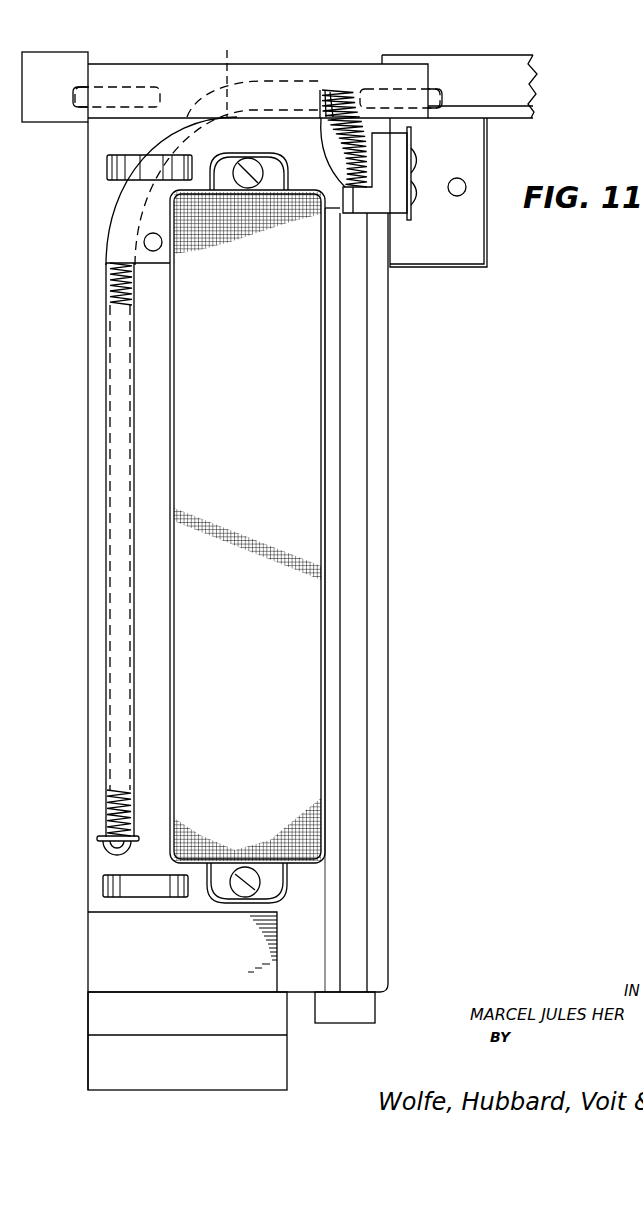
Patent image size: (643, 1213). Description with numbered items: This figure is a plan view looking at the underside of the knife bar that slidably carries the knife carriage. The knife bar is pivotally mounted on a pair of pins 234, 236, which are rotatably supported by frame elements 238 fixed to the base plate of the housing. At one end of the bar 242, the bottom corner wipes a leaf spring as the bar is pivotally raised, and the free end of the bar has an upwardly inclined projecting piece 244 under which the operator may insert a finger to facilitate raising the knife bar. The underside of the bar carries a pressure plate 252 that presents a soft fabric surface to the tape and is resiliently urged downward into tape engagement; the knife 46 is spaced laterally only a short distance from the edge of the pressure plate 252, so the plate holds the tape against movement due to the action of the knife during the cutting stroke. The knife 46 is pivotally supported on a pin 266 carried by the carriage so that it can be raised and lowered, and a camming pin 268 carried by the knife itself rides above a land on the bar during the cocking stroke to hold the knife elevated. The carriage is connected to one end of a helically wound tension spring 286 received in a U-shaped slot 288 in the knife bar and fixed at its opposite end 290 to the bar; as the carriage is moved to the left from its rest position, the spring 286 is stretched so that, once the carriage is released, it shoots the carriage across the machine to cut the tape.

The frame elements 238 is at (63, 27).
The pin 234 is at (120, 88).
The U-shaped slot 288 is at (227, 50).
The end of the bar 242 is at (288, 30).
The helically wound tension spring 286 is at (320, 108).
The pin 236 is at (398, 85).
The pin 266 is at (416, 165).
The camming pin 268 is at (416, 193).
The knife 46 is at (403, 227).
The pressure plate 252 is at (303, 430).
The opposite end of the spring 290 is at (110, 833).
The upwardly inclined projecting piece 244 is at (108, 1068).